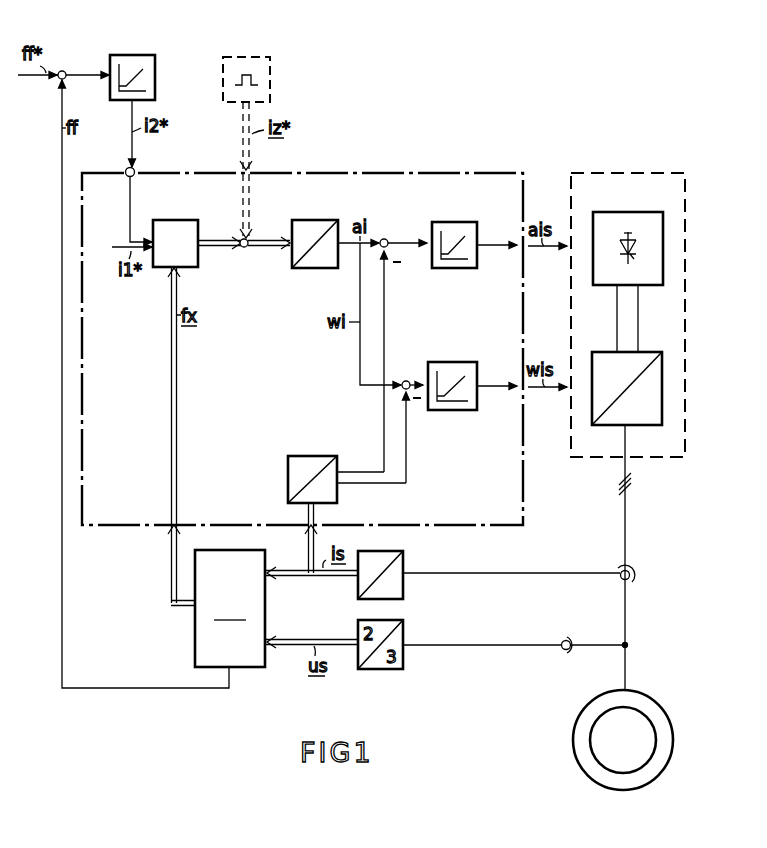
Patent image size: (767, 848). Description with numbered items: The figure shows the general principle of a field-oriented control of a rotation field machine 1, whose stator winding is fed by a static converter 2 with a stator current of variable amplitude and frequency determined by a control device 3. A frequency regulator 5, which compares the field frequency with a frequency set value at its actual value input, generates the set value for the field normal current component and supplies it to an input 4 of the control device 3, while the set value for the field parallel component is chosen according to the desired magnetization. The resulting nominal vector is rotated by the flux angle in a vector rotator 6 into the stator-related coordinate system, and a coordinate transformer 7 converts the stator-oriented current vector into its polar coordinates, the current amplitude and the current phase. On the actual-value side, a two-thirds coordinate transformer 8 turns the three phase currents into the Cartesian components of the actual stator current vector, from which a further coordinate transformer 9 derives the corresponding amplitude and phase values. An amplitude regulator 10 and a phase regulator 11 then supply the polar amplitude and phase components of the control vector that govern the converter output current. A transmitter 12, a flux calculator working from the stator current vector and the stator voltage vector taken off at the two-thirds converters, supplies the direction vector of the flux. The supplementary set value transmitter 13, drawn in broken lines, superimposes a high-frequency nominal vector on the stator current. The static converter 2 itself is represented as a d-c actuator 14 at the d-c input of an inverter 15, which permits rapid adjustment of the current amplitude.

The rotation field machine 1 is at (577, 726).
The static converter 2 is at (706, 419).
The control device 3 is at (412, 173).
The input 4 is at (136, 170).
The frequency regulator 5 is at (126, 55).
The vector rotator 6 is at (182, 220).
The coordinate transformer 7 is at (314, 220).
The 2/3 coordinate transformer 8 is at (403, 555).
The coordinate transformer 9 is at (310, 456).
The amplitude regulator 10 is at (478, 222).
The phase regulator 11 is at (462, 362).
The transmitter 12 is at (248, 667).
The supplementary set value transmitter 13 is at (243, 57).
The d-c actuator 14 is at (665, 246).
The inverter 15 is at (648, 425).